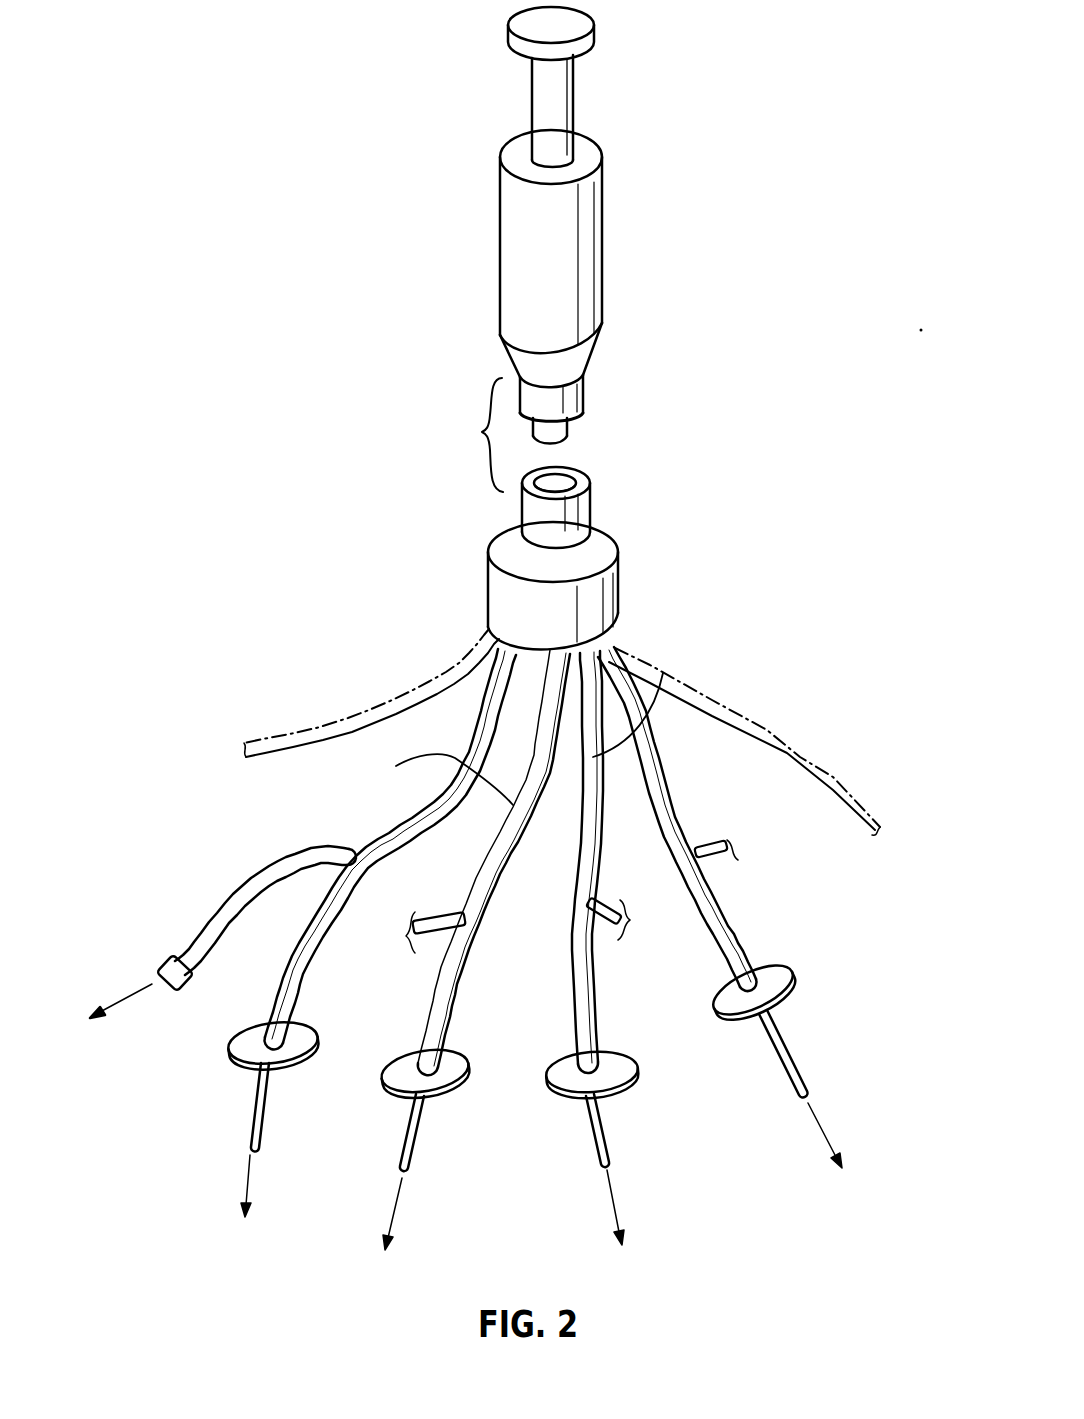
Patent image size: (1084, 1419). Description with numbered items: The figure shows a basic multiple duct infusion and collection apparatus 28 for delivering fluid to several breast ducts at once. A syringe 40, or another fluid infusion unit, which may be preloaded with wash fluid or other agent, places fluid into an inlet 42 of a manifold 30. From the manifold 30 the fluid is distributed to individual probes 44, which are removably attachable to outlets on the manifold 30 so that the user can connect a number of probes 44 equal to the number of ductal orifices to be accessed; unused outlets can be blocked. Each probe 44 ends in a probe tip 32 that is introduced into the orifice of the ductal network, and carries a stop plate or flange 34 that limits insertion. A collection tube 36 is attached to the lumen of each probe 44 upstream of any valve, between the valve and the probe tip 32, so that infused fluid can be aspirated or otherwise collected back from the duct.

The multiple duct infusion and collection apparatus 28 is at (722, 522).
The manifold 30 is at (487, 578).
The probe tip 32 is at (253, 1113).
The stop plate or flange 34 is at (293, 1032).
The collection tube 36 is at (227, 905).
The syringe 40 is at (597, 262).
The inlet 42 is at (523, 503).
The probe 44 is at (335, 722).